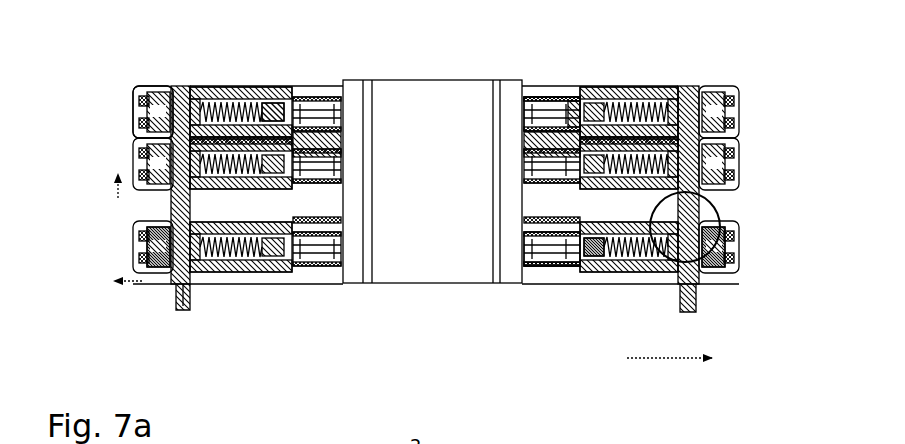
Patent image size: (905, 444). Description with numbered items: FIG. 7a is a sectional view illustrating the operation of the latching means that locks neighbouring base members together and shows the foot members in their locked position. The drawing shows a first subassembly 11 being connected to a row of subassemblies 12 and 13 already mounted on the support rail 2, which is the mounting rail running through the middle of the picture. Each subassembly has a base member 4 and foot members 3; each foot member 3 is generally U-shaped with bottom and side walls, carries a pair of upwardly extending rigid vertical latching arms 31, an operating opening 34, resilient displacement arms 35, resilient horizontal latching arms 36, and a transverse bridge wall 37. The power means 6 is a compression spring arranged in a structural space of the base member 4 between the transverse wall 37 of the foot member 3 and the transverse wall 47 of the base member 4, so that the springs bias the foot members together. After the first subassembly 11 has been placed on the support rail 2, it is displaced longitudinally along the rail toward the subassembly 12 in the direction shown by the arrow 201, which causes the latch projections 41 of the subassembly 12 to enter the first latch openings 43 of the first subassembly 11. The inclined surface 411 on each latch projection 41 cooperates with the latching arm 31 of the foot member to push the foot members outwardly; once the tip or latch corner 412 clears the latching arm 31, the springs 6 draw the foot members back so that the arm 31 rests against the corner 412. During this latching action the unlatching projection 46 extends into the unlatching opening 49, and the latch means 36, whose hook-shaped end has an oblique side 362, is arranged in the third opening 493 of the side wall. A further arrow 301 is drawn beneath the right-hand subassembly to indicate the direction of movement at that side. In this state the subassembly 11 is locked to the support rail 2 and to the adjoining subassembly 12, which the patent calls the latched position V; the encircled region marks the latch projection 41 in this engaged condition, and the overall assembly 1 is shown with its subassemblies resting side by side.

The connector assembly 1 is at (158, 46).
The support rail 2 is at (397, 105).
The foot member 3 is at (240, 280).
The latched position V is at (252, 86).
The base member 4 is at (161, 287).
The power means 6 is at (635, 272).
The first subassembly 11 is at (168, 250).
The subassembly 12 is at (163, 148).
The subassembly 13 is at (162, 92).
The vertical latching arm 31 is at (720, 270).
The operating opening 34 is at (723, 246).
The resilient displacement arm 35 is at (620, 92).
The horizontal latching arm 36 is at (530, 100).
The transverse bridge wall 37 is at (600, 270).
The latch projection 41 is at (691, 213).
The first latch opening 43 is at (684, 92).
The unlatching projection 46 is at (556, 276).
The transverse wall 47 is at (675, 262).
The unlatching opening 49 is at (592, 214).
The direction of lateral displacement 201 is at (94, 197).
The mating direction 301 is at (662, 360).
The oblique side 362 is at (560, 132).
The inclined surface 411 is at (173, 318).
The latch corner 412 is at (168, 292).
The third opening 493 is at (530, 80).